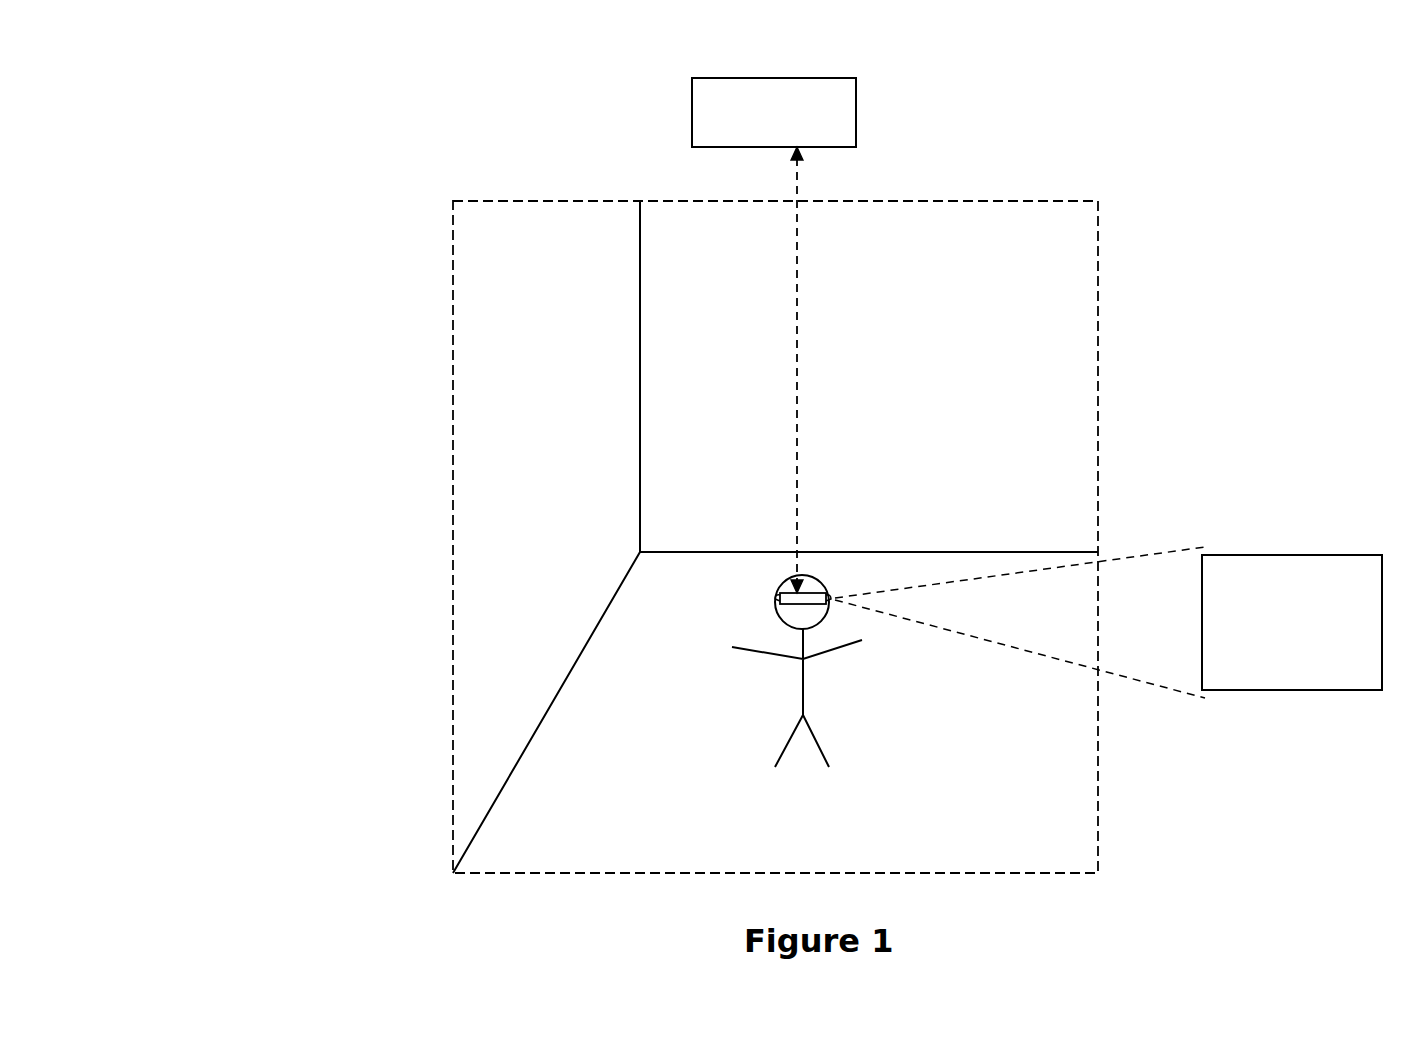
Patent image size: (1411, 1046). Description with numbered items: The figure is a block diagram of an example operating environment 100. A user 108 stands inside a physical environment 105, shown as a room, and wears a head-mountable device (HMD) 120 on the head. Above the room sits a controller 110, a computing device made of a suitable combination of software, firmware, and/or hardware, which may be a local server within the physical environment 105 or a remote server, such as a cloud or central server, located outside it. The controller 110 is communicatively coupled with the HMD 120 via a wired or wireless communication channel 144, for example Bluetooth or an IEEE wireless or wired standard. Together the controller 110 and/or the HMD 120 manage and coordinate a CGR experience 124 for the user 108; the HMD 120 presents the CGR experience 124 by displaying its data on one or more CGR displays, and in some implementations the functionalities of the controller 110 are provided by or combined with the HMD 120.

The operating environment 100 is at (292, 84).
The physical environment 105 is at (775, 537).
The controller 110 is at (774, 112).
The communication channel 144 is at (795, 352).
The user 108 is at (782, 751).
The head-mountable device 120 is at (808, 592).
The CGR experience 124 is at (1108, 622).